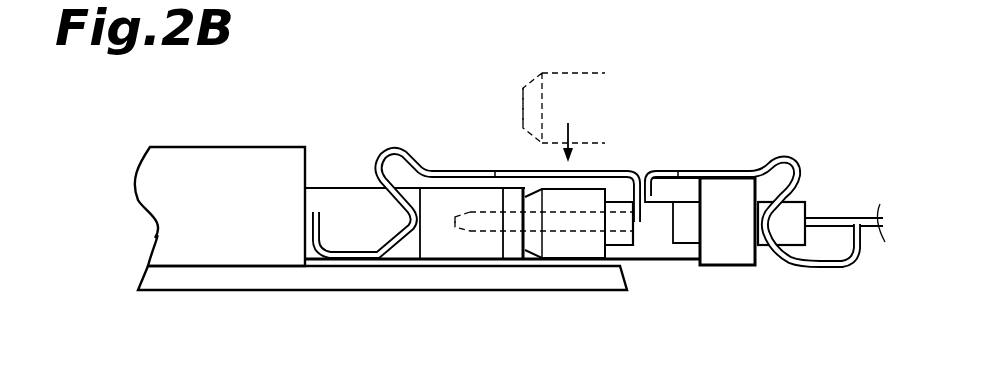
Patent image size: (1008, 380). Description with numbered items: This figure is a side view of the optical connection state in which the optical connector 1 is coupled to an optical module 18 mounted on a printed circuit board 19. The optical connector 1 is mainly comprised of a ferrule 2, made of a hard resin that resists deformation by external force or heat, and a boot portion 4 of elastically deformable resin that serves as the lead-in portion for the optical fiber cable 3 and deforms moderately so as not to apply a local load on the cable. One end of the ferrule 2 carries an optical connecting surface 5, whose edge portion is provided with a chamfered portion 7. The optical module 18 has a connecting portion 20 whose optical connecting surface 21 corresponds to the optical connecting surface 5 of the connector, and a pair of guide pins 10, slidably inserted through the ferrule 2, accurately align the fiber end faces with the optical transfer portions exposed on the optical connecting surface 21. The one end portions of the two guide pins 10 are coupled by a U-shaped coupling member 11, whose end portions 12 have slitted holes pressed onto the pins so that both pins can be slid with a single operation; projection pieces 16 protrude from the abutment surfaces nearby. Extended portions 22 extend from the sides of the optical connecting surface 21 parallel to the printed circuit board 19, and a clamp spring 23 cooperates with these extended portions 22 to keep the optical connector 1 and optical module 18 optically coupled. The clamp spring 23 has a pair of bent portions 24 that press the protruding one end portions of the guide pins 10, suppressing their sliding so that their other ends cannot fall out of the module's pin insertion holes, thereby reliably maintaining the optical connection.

The optical connector 1 is at (684, 280).
The ferrule 2 is at (575, 242).
The optical fiber cable 3 is at (833, 220).
The boot portion 4 is at (797, 217).
The optical connecting surface 5 is at (522, 107).
The chamfered portion 7 is at (535, 245).
The guide pin 10 is at (492, 228).
The coupling member 11 is at (630, 271).
The end portion 12 is at (617, 233).
The projection piece 16 is at (693, 218).
The optical module 18 is at (252, 227).
The printed circuit board 19 is at (370, 282).
The connecting portion 20 is at (506, 170).
The optical connecting surface 21 is at (538, 187).
The extended portion 22 is at (435, 200).
The clamp spring 23 is at (506, 170).
The bent portion 24 is at (650, 190).